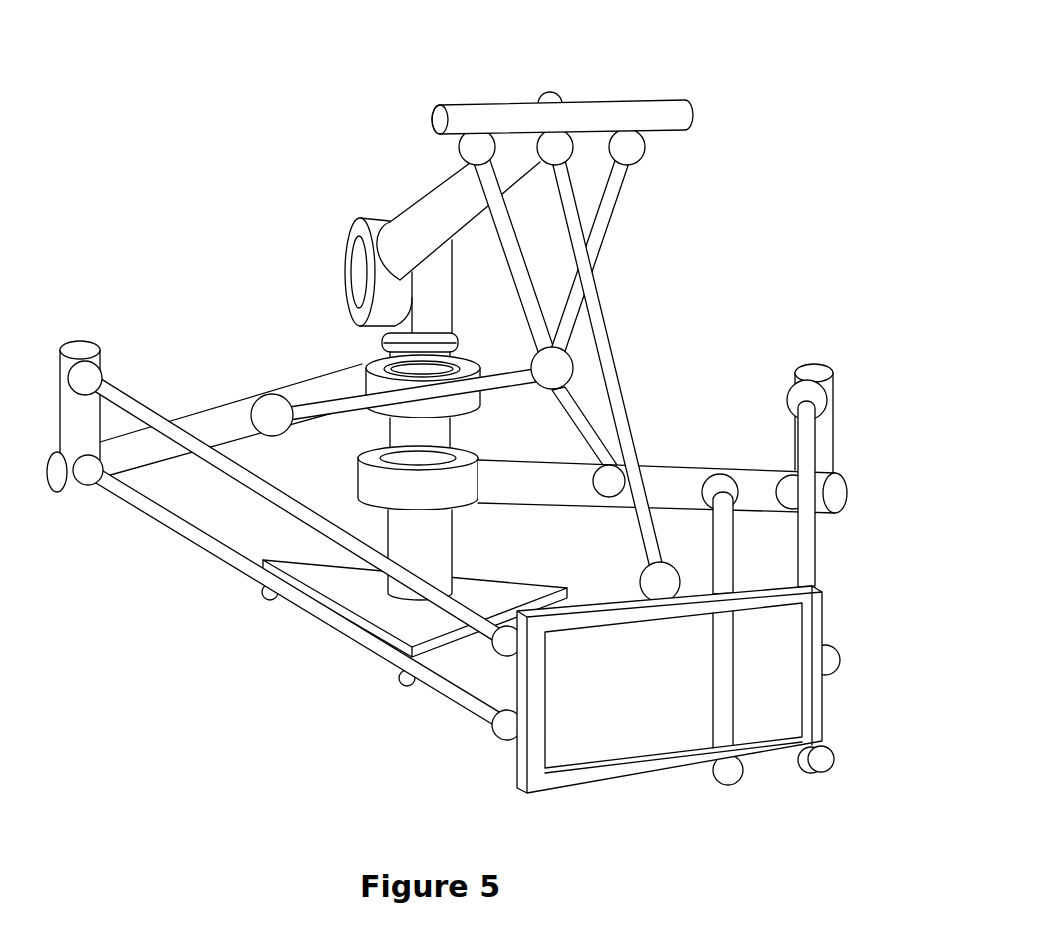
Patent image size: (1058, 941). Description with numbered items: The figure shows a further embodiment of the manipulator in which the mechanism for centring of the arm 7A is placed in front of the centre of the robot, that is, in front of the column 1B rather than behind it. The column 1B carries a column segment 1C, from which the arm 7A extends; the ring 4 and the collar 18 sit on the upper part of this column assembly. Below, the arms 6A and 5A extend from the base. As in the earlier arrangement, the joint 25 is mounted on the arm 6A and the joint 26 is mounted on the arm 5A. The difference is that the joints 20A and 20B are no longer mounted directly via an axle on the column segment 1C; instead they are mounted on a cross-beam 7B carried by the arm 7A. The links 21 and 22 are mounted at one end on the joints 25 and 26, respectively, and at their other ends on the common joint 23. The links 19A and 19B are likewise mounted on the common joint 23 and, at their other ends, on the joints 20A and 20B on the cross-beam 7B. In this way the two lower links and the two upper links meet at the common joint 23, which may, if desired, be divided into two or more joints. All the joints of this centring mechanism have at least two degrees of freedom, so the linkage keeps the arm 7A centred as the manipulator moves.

The column 1B is at (396, 432).
The column segment 1C is at (425, 290).
The ring 4 is at (357, 232).
The arm 5A is at (678, 480).
The arm 6A is at (150, 452).
The arm 7A is at (442, 205).
The cross-beam 7B is at (667, 112).
The collar 18 is at (378, 341).
The link 19A is at (500, 211).
The link 19B is at (600, 222).
The joint 20A is at (478, 147).
The joint 20B is at (626, 145).
The link 21 is at (467, 387).
The link 22 is at (573, 410).
The common joint 23 is at (553, 368).
The joint 25 is at (267, 410).
The joint 26 is at (607, 485).